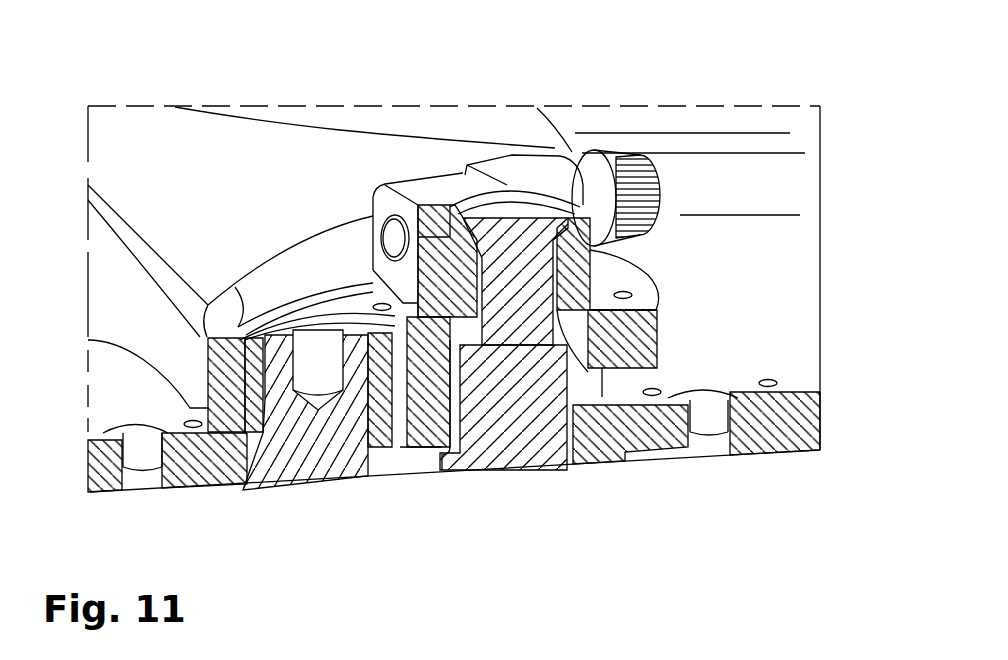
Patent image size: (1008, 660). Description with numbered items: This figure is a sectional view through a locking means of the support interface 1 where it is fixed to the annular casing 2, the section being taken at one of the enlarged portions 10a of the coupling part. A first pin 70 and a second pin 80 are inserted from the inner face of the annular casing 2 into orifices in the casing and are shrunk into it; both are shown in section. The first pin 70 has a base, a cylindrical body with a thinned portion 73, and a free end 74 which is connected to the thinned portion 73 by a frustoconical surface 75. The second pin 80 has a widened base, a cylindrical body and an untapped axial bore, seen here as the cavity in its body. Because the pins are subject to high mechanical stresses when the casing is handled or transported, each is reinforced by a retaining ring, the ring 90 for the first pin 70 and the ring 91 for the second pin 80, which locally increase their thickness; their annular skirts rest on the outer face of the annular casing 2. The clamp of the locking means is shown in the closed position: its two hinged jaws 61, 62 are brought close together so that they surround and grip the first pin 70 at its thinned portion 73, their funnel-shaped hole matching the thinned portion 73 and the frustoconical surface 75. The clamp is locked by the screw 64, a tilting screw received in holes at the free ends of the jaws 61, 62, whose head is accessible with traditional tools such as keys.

The support interface 1 is at (208, 207).
The annular casing 2 is at (785, 424).
The enlarged portions 10a is at (652, 302).
The jaw 61 is at (600, 270).
The jaw 62 is at (448, 263).
The screw 64 is at (660, 192).
The first pin 70 is at (512, 413).
The thinned portion 73 is at (650, 358).
The free end 74 is at (512, 245).
The frustoconical surface 75 is at (558, 240).
The second pin 80 is at (325, 477).
The retaining ring 90 is at (230, 484).
The retaining ring 91 is at (425, 380).